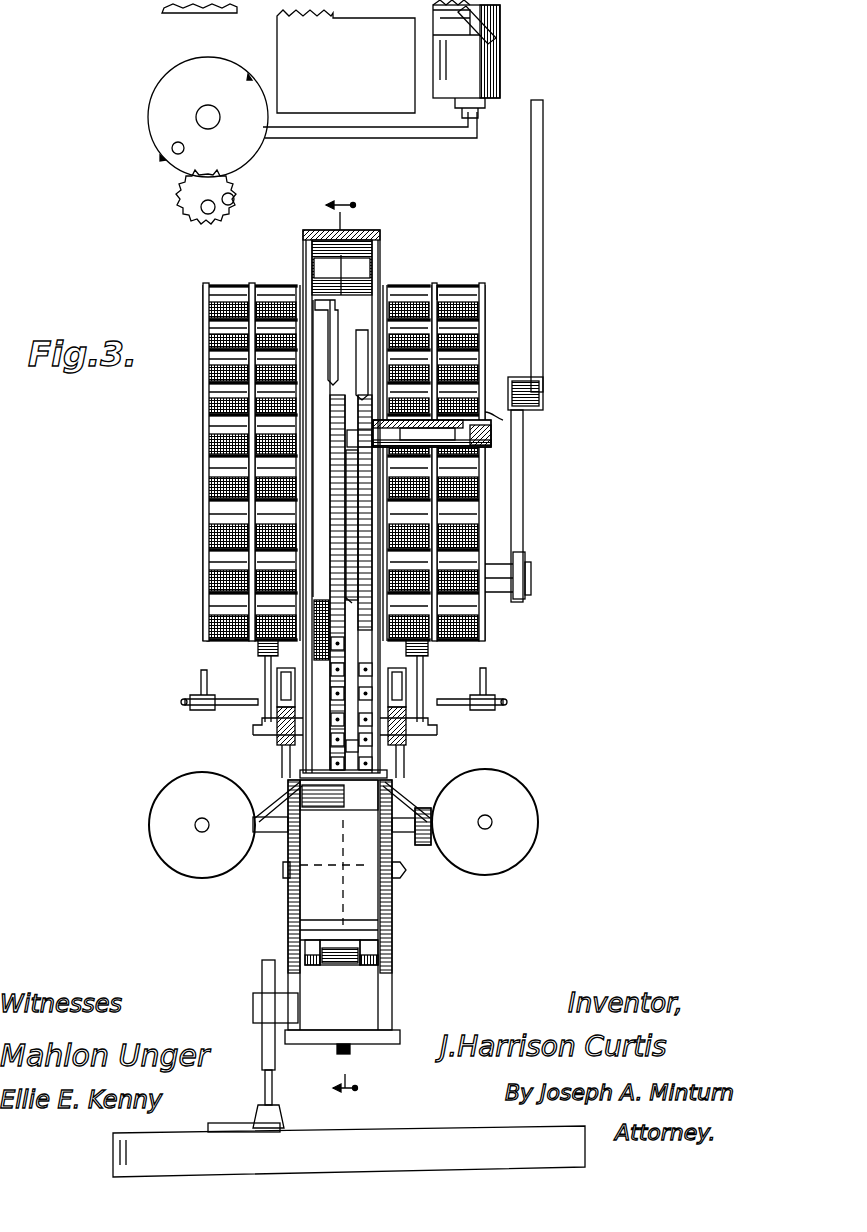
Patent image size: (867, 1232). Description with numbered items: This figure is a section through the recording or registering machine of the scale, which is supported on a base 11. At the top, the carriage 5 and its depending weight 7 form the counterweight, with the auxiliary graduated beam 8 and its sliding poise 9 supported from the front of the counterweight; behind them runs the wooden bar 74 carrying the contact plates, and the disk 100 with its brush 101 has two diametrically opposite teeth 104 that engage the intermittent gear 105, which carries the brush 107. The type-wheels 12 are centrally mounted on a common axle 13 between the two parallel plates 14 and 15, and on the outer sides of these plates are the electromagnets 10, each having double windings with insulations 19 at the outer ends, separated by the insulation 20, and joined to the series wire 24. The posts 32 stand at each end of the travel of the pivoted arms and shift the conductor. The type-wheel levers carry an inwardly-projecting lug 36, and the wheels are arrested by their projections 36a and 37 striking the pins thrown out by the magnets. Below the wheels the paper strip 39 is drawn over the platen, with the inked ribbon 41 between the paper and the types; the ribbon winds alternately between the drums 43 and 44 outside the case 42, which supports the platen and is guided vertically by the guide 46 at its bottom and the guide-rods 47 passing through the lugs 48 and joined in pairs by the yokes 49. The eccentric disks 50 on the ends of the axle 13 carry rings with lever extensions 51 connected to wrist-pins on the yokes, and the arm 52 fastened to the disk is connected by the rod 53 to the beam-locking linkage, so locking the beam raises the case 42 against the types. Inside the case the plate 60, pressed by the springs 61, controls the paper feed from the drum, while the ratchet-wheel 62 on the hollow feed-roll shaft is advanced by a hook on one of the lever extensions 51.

The carriage 5 is at (350, 648).
The weight 7 is at (370, 74).
The auxiliary graduated beam 8 is at (497, 30).
The sliding poise 9 is at (500, 52).
The electromagnets 10 is at (203, 404).
The base 11 is at (349, 1151).
The type-wheels 12 is at (345, 582).
The axle 13 is at (497, 565).
The plate 14 is at (341, 501).
The plate 15 is at (335, 514).
The insulations 19 is at (205, 290).
The insulation 20 is at (250, 286).
The wire 24 is at (440, 286).
The posts 32 is at (216, 708).
The lug 36 is at (355, 357).
The projections 36a is at (352, 594).
The projections 37 is at (403, 371).
The paper strip 39 is at (339, 852).
The inked ribbon 41 is at (270, 808).
The case 42 is at (392, 916).
The drum 43 is at (218, 825).
The drum 44 is at (465, 822).
The guide 46 is at (254, 1046).
The guide-rods 47 is at (282, 760).
The lugs 48 is at (277, 746).
The yokes 49 is at (285, 690).
The eccentric disks 50 is at (258, 650).
The lever extensions 51 is at (265, 666).
The arm 52 is at (523, 495).
The rod 53 is at (543, 266).
The plate 60 is at (336, 965).
The springs 61 is at (370, 965).
The ratchet-wheel 62 is at (422, 845).
The bar 74 is at (162, 10).
The disk 100 is at (208, 117).
The brush 101 is at (184, 150).
The teeth 104 is at (158, 158).
The intermittent gear 105 is at (195, 197).
The brush 107 is at (234, 199).